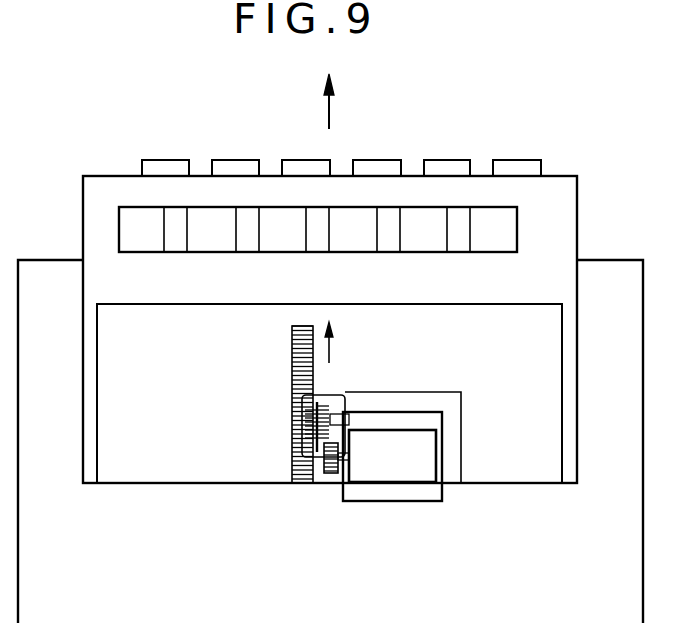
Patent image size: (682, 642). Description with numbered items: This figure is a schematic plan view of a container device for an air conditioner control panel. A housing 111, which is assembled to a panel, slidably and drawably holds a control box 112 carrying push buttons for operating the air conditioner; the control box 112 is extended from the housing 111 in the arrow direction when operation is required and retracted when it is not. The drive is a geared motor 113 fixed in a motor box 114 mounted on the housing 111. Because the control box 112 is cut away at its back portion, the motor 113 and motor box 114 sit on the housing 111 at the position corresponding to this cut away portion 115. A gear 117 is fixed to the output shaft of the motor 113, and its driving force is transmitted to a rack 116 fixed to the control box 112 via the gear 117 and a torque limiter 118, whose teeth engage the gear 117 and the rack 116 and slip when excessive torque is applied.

The housing 111 is at (612, 272).
The control box 112 is at (552, 187).
The geared motor 113 is at (372, 473).
The motor box 114 is at (427, 492).
The cut away portion 115 is at (458, 458).
The rack 116 is at (291, 345).
The gear 117 is at (332, 474).
The torque limiter 118 is at (323, 405).